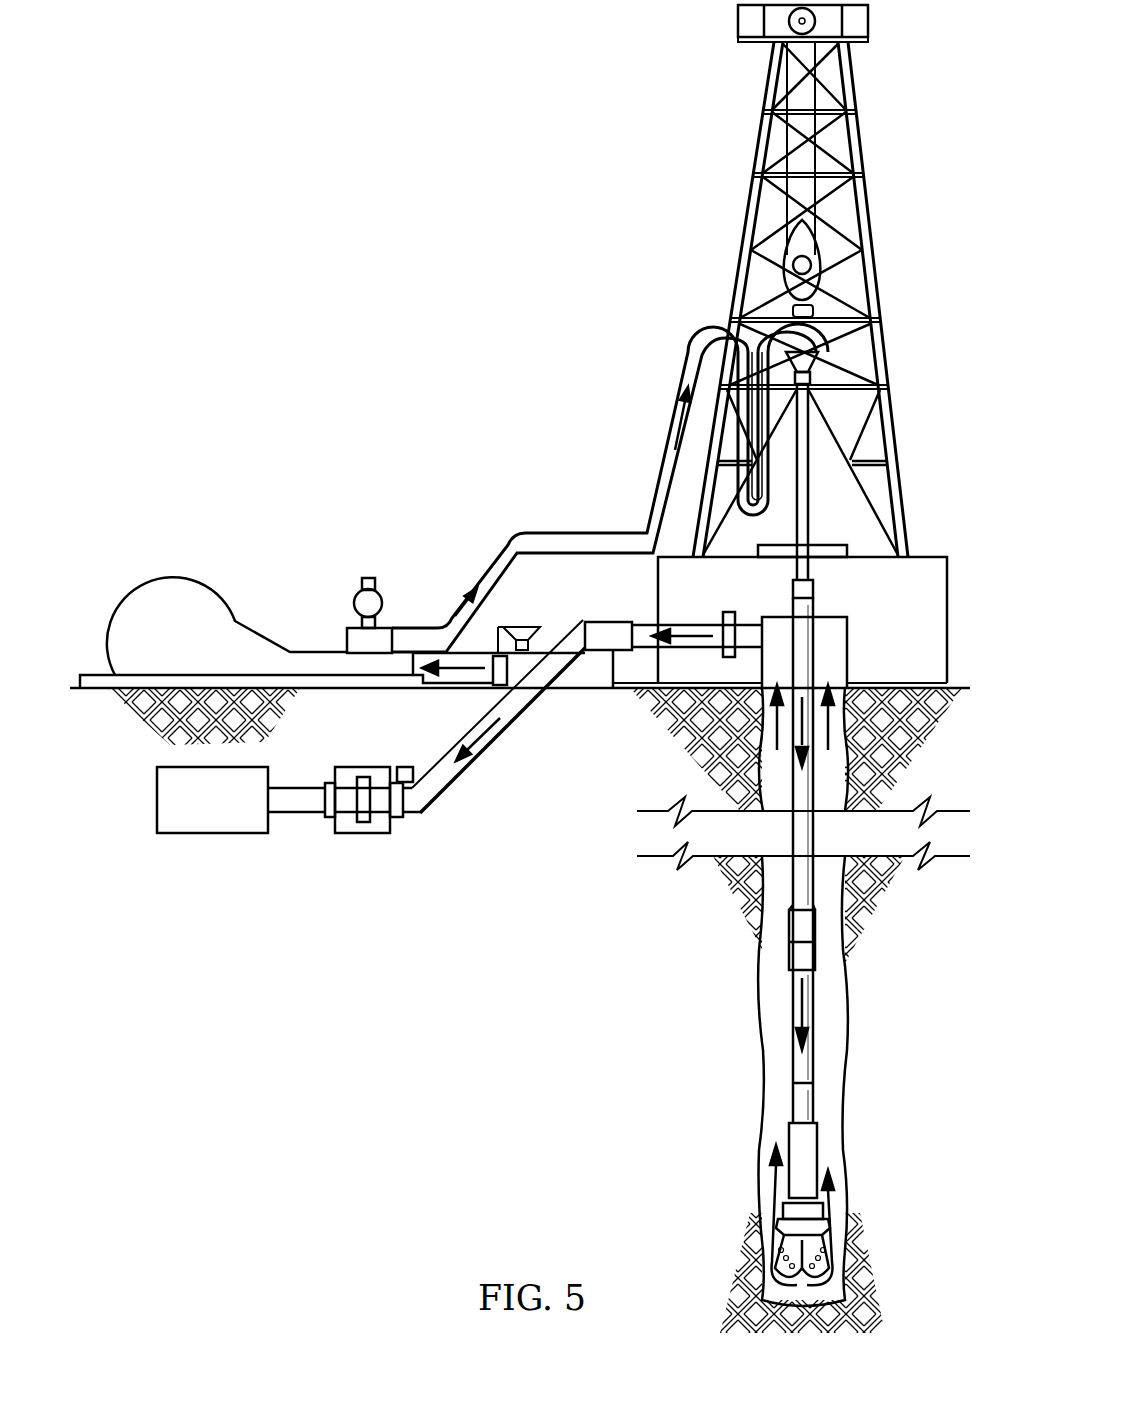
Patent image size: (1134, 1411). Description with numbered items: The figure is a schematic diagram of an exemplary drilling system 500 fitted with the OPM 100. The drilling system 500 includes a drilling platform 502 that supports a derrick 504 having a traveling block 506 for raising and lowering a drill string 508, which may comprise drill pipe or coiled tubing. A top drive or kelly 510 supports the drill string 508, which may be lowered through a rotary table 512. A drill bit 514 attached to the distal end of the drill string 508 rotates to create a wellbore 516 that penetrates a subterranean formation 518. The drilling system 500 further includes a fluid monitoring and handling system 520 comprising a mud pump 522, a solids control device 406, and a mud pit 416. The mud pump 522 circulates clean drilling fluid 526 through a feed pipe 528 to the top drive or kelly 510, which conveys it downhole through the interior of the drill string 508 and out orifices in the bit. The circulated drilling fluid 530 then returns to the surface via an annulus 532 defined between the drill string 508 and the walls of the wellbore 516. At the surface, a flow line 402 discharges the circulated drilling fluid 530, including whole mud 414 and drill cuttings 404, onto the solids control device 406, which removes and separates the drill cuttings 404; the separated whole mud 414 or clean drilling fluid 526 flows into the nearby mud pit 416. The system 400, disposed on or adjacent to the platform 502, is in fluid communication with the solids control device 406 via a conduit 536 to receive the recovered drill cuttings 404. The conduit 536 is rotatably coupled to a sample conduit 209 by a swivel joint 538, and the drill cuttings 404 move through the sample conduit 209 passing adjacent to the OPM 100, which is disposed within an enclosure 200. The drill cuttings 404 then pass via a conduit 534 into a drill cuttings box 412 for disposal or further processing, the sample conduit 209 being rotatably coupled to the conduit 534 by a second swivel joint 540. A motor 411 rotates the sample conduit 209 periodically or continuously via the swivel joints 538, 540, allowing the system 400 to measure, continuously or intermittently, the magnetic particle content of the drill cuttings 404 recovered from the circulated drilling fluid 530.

The drilling system 500 is at (388, 203).
The derrick 504 is at (879, 298).
The traveling block 506 is at (820, 253).
The top drive or kelly 510 is at (810, 520).
The rotary table 512 is at (848, 553).
The drilling platform 502 is at (919, 633).
The drill string 508 is at (793, 1068).
The drill bit 514 is at (828, 1243).
The wellbore 516 is at (838, 1015).
The subterranean formation 518 is at (657, 927).
The fluid monitoring and handling system 520 is at (474, 493).
The mud pump 522 is at (173, 578).
The clean drilling fluid 526 is at (440, 628).
The feed pipe 528 is at (577, 533).
The circulated drilling fluid 530 is at (827, 732).
The annulus 532 is at (835, 1148).
The system 400 is at (224, 932).
The flow line 402 is at (750, 622).
The drill cuttings 404 is at (488, 746).
The solids control device 406 is at (620, 622).
The motor 411 is at (407, 767).
The drill cuttings box 412 is at (157, 805).
The whole mud 414 is at (578, 685).
The mud pit 416 is at (598, 680).
The enclosure 200 is at (362, 752).
The sample conduit 209 is at (345, 820).
The OPM 100 is at (362, 822).
The conduit 534 is at (297, 812).
The conduit 536 is at (452, 780).
The swivel joint 538 is at (398, 817).
The swivel joint 540 is at (330, 785).